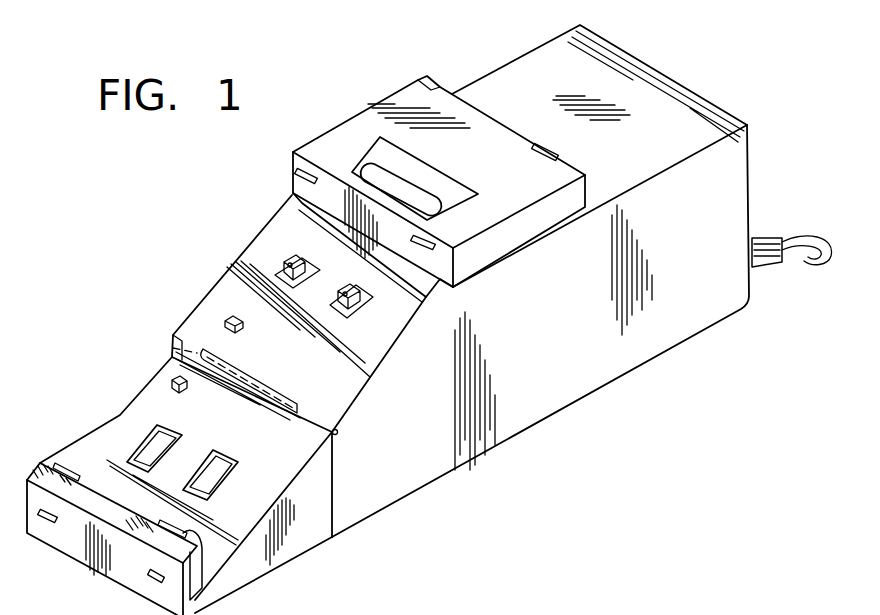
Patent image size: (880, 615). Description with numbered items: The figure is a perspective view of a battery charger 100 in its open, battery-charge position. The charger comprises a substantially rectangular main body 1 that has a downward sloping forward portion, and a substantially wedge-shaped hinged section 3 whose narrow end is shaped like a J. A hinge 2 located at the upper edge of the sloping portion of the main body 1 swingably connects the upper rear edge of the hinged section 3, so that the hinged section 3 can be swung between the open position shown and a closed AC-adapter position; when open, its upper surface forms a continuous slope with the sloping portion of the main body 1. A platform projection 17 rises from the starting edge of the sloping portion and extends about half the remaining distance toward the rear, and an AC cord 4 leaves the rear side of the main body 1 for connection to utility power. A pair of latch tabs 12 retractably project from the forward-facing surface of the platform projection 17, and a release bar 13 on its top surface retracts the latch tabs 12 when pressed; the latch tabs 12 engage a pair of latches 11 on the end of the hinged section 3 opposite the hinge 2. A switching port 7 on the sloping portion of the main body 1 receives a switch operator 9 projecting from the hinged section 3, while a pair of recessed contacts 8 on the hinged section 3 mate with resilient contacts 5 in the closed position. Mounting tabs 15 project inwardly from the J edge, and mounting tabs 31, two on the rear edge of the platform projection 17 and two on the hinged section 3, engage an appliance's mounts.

The battery charger 100 is at (562, 486).
The main body 1 is at (665, 327).
The hinge 2 is at (338, 434).
The hinged section 3 is at (287, 555).
The AC cord 4 is at (773, 263).
The contacts 5 is at (283, 260).
The switching port 7 is at (227, 320).
The recessed contacts 8 is at (153, 448).
The switch operator 9 is at (173, 373).
The latches 11 is at (49, 523).
The latch tabs 12 is at (296, 176).
The release bar 13 is at (372, 172).
The mounting tabs 15 is at (213, 573).
The platform projection 17 is at (416, 167).
The mounting tabs 31 is at (432, 82).